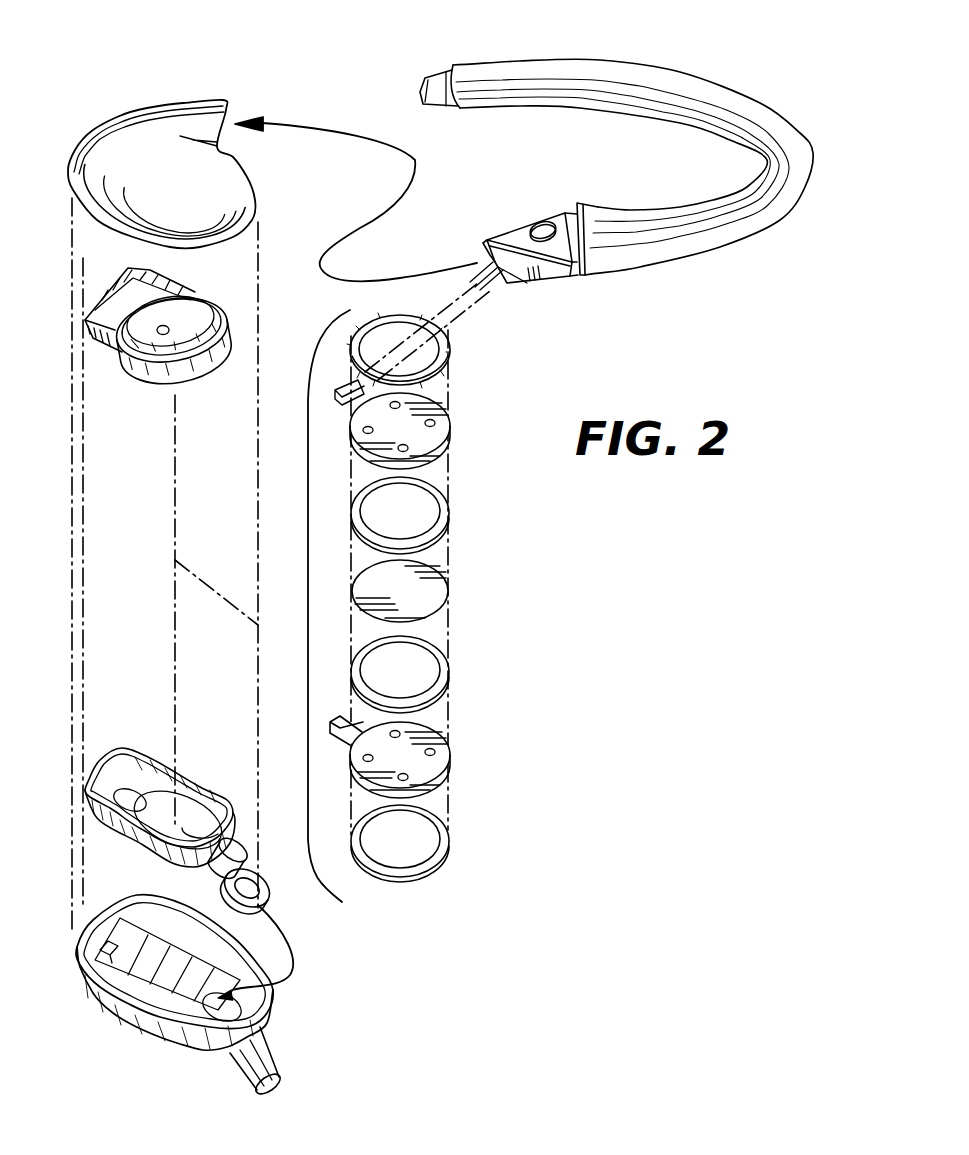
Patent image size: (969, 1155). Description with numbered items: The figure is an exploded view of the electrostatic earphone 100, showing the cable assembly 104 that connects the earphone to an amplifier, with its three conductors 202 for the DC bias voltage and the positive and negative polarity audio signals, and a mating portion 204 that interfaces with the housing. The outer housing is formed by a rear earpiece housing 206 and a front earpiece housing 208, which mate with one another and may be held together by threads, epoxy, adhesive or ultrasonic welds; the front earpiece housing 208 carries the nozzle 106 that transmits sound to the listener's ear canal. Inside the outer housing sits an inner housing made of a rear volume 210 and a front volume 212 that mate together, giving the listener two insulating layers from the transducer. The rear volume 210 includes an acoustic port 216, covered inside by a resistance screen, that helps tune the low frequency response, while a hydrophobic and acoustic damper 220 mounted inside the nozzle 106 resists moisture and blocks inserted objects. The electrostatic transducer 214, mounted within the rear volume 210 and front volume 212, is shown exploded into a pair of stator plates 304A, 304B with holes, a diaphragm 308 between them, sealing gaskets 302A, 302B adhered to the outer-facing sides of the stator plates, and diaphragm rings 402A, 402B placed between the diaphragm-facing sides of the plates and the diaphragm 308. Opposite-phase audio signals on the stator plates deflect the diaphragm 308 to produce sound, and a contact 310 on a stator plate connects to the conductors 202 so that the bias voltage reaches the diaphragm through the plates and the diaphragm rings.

The electrostatic earphone 100 is at (104, 93).
The cable assembly 104 is at (740, 80).
The nozzle 106 is at (265, 1060).
The conductors 202 is at (503, 290).
The mating portion 204 is at (518, 228).
The rear earpiece housing 206 is at (171, 100).
The front earpiece housing 208 is at (124, 1020).
The rear volume 210 is at (193, 302).
The front volume 212 is at (120, 750).
The electrostatic transducer 214 is at (318, 345).
The acoustic port 216 is at (163, 336).
The hydrophobic and acoustic damper 220 is at (260, 896).
The sealing gasket 302A is at (450, 365).
The sealing gasket 302B is at (428, 872).
The stator plate 304A is at (450, 434).
The stator plate 304B is at (450, 758).
The diaphragm 308 is at (446, 588).
The contact 310 is at (331, 390).
The diaphragm ring 402A is at (450, 503).
The diaphragm ring 402B is at (450, 673).